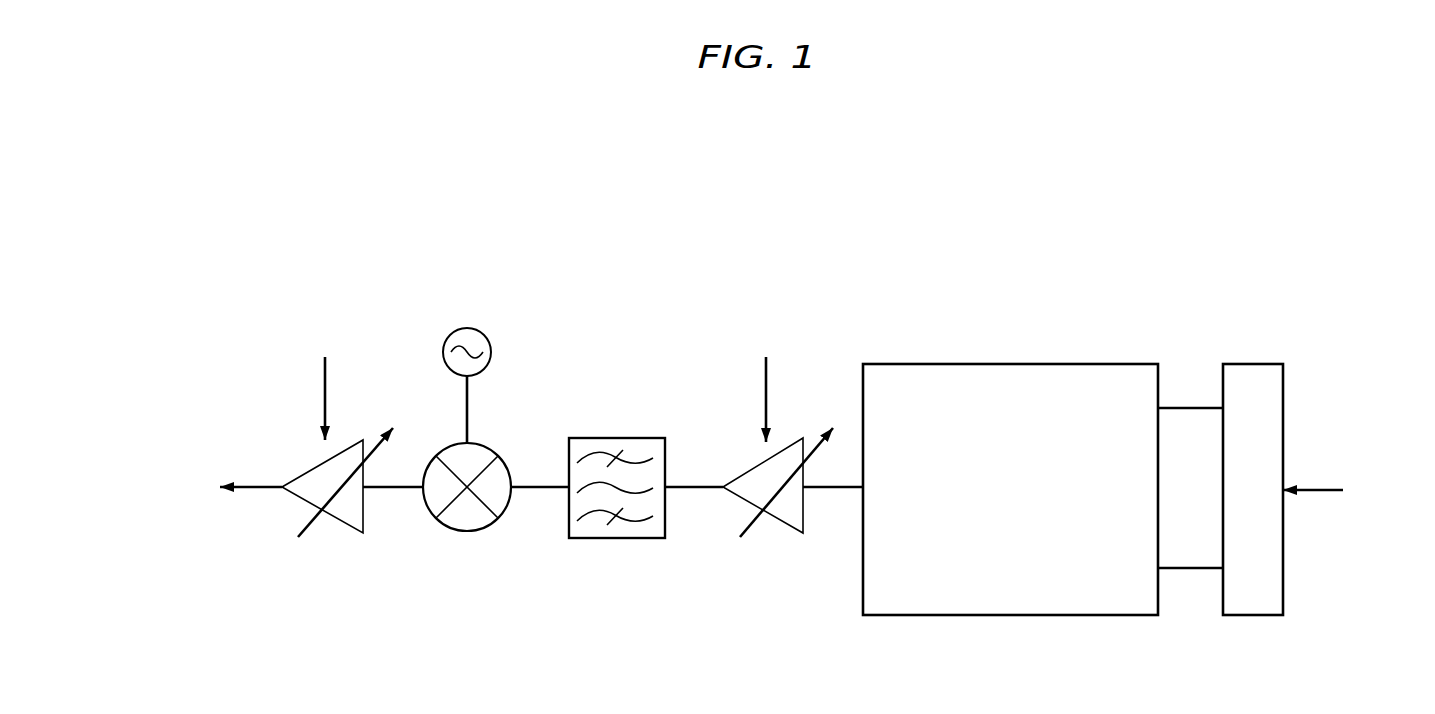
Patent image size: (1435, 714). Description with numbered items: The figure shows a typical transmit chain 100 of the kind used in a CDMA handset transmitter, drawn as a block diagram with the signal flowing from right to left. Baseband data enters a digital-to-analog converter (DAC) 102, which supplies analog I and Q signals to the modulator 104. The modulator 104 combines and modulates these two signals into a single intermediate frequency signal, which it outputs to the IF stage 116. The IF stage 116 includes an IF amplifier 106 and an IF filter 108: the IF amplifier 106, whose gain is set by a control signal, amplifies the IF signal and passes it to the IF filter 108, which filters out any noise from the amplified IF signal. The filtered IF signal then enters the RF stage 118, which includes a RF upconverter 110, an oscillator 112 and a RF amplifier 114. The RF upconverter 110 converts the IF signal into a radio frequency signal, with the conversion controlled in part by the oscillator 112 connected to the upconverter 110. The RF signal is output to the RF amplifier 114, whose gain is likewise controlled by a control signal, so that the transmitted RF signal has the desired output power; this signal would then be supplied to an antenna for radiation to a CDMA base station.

The transmit chain 100 is at (805, 288).
The digital-to-analog converter (DAC) 102 is at (1247, 364).
The modulator 104 is at (1072, 364).
The IF amplifier 106 is at (738, 477).
The IF filter 108 is at (612, 438).
The RF upconverter 110 is at (485, 442).
The oscillator 112 is at (467, 328).
The RF amplifier 114 is at (300, 477).
The intermediate frequency (IF) stage 116 is at (580, 325).
The radio frequency (RF) stage 118 is at (398, 330).